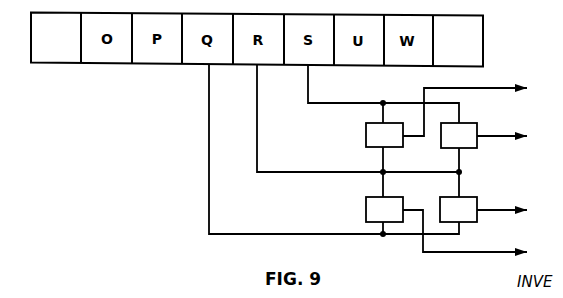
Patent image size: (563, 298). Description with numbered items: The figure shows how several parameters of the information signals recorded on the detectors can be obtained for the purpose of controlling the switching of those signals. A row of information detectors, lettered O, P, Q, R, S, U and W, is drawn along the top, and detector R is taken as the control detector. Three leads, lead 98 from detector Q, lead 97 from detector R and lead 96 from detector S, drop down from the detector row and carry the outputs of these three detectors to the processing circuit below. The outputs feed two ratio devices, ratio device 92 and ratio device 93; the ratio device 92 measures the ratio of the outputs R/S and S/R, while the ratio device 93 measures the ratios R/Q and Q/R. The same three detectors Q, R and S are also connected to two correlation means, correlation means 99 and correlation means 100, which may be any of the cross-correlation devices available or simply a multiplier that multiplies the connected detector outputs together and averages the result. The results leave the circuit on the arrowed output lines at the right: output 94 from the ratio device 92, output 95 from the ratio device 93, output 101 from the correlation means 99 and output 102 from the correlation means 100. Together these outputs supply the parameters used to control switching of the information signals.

The ratio device 92 is at (462, 121).
The ratio device 93 is at (462, 195).
The output line 94 is at (505, 132).
The output line 95 is at (503, 206).
The lead 96 is at (310, 97).
The lead 97 is at (259, 97).
The lead 98 is at (212, 97).
The correlation means 99 is at (364, 137).
The correlation means 100 is at (364, 205).
The output line 101 is at (491, 88).
The output line 102 is at (495, 250).